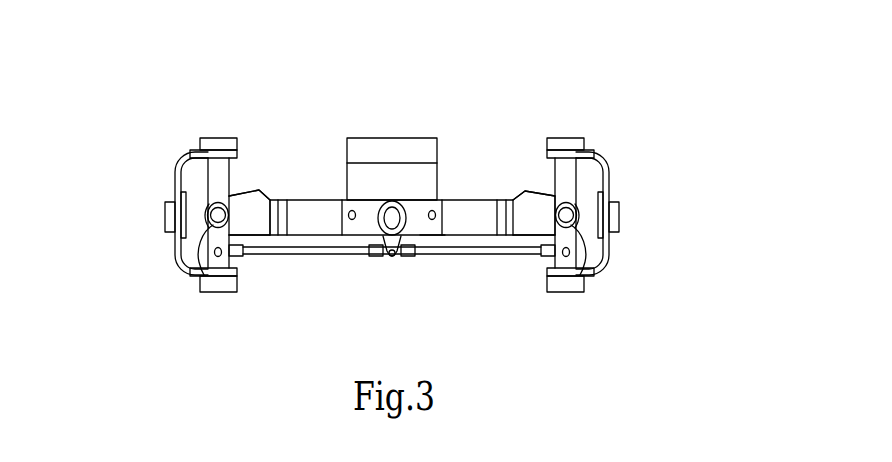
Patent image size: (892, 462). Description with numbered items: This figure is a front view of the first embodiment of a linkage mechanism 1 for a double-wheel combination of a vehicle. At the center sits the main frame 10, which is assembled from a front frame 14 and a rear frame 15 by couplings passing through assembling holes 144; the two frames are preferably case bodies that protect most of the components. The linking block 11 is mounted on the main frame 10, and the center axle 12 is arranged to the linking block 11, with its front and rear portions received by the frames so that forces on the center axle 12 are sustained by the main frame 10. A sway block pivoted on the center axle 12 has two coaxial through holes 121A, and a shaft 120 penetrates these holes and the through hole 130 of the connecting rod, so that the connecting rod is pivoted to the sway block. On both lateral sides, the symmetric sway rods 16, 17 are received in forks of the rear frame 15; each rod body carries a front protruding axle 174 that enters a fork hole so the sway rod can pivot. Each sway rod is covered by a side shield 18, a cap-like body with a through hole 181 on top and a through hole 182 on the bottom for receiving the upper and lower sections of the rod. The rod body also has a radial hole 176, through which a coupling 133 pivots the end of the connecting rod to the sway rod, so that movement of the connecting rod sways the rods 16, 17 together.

The suspension assembly 1 is at (307, 148).
The main frame 10 is at (470, 190).
The linking block 11 is at (412, 138).
The center axle 12 is at (372, 233).
The through holes 121A is at (369, 278).
The shaft 120 is at (388, 254).
The through hole 130 is at (452, 262).
The front frame 14 is at (433, 228).
The assembling holes 144 is at (434, 210).
The rear frame 15 is at (311, 198).
The sway rod 16 is at (203, 175).
The sway rod 17 is at (580, 172).
The side shield 18 is at (632, 192).
The through hole 181 is at (558, 167).
The through hole 182 is at (573, 272).
The hole 133 is at (643, 239).
The radial hole 176 is at (571, 249).
The front protruding axle 174 is at (565, 238).